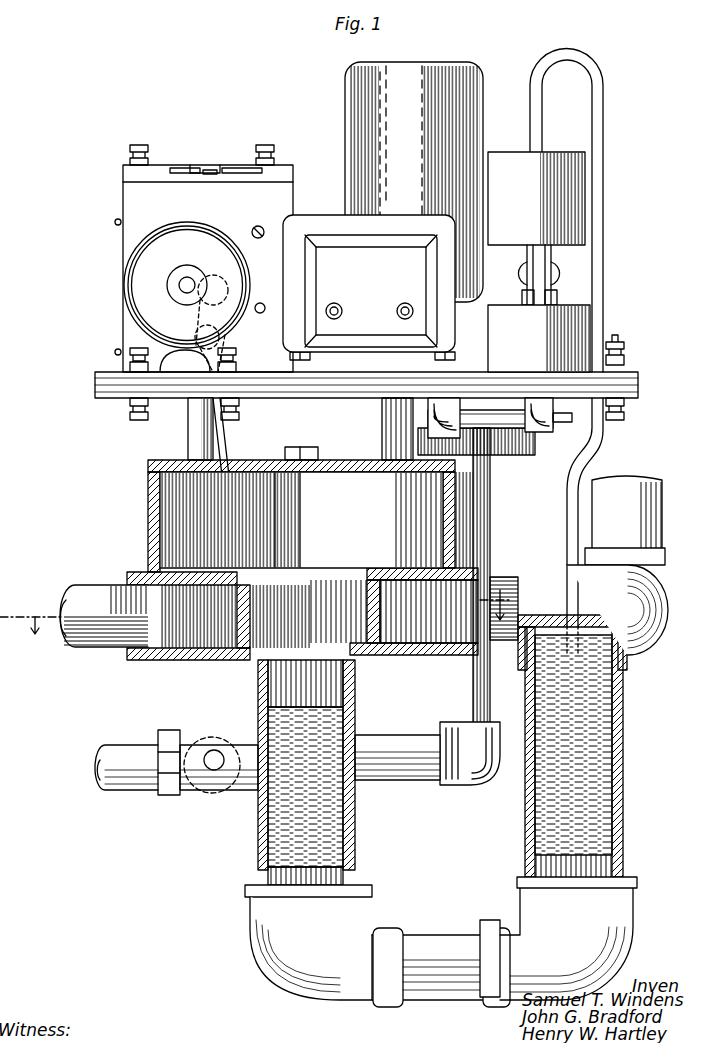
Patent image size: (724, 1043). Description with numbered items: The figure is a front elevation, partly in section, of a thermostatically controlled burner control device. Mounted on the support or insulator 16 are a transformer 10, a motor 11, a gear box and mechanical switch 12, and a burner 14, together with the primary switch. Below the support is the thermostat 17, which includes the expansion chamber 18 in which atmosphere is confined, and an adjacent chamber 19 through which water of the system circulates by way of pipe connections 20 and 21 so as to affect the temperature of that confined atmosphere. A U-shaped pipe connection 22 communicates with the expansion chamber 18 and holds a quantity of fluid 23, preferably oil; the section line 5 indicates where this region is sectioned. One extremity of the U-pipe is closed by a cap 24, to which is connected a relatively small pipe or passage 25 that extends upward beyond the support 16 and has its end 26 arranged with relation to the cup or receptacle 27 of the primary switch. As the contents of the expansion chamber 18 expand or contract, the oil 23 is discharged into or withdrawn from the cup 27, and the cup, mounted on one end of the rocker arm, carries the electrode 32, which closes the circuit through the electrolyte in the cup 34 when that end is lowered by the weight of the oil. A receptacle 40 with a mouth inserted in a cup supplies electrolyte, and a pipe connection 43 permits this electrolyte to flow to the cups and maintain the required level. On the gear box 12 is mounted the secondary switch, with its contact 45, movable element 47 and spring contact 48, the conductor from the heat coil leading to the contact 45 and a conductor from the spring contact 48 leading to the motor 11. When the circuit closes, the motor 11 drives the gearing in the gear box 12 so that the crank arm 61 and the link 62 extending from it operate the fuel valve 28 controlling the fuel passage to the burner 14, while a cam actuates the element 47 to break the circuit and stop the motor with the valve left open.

The section line 5 is at (262, 612).
The transformer 10 is at (369, 283).
The motor 11 is at (187, 285).
The gear box and mechanical switch 12 is at (204, 268).
The burner 14 is at (495, 433).
The support or insulator 16 is at (366, 385).
The thermostat 17 is at (148, 505).
The expansion chamber 18 is at (301, 520).
The chamber 19 is at (396, 655).
The pipe connection 20 is at (93, 585).
The pipe connection 21 is at (534, 582).
The pipe connection 22 is at (357, 843).
The fluid 23 is at (330, 703).
The cap 24 is at (630, 660).
The pipe or passage 25 is at (606, 440).
The end 26 is at (542, 120).
The cup or receptacle 27 is at (536, 198).
The fuel valve 28 is at (258, 815).
The electrode 32 is at (527, 282).
The cup 34 is at (539, 338).
The receptacle 40 is at (414, 182).
The pipe connection 43 is at (500, 455).
The contact 45 is at (236, 168).
The movable element 47 is at (208, 170).
The spring contact 48 is at (183, 168).
The crank arm 61 is at (240, 328).
The link 62 is at (233, 447).